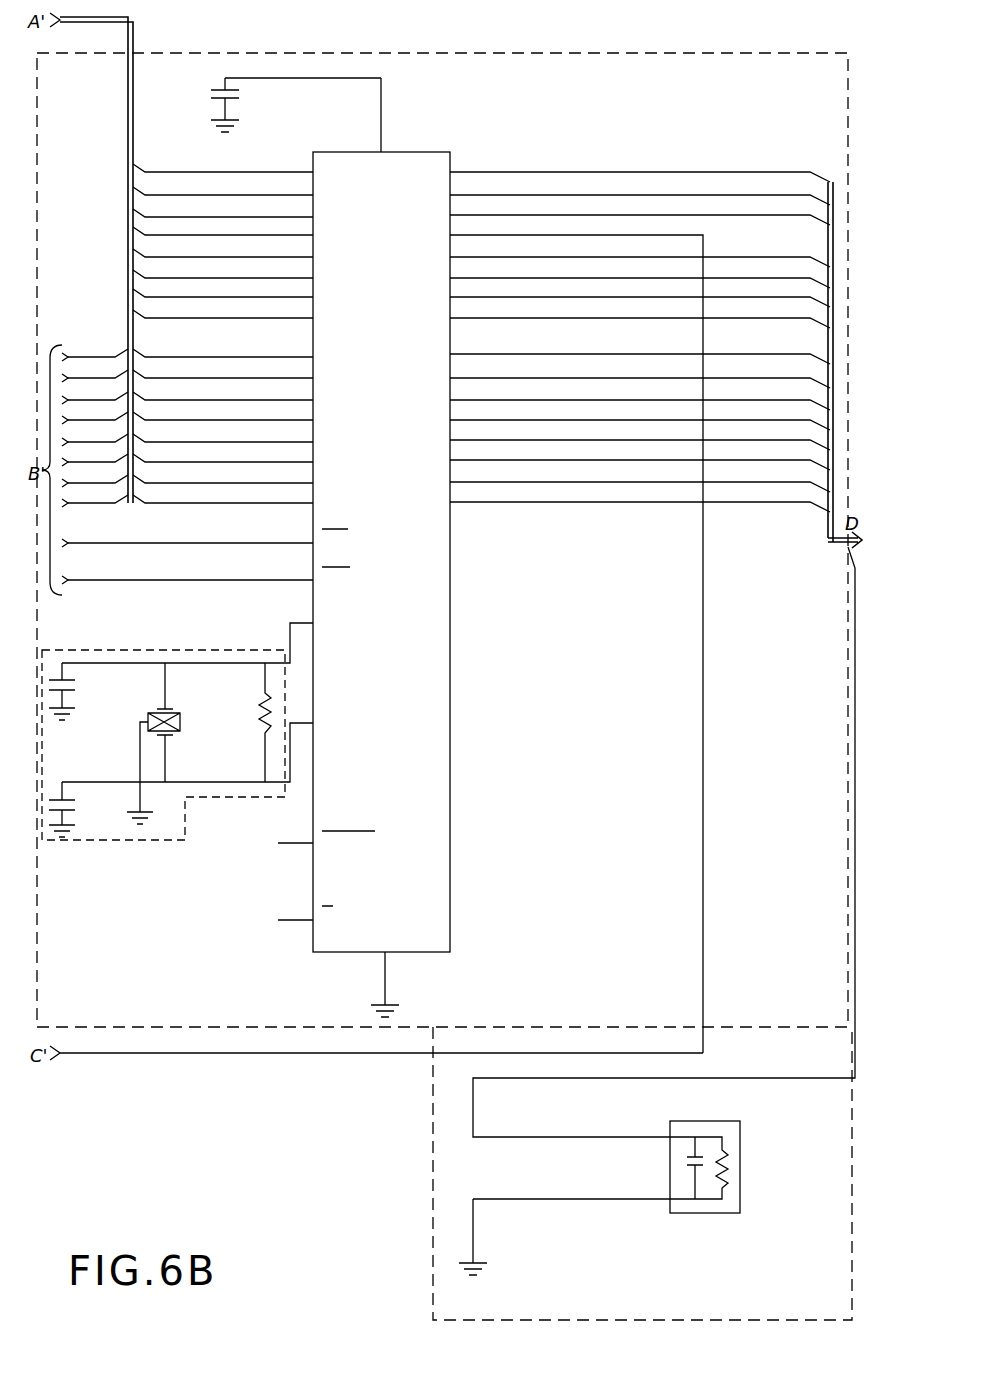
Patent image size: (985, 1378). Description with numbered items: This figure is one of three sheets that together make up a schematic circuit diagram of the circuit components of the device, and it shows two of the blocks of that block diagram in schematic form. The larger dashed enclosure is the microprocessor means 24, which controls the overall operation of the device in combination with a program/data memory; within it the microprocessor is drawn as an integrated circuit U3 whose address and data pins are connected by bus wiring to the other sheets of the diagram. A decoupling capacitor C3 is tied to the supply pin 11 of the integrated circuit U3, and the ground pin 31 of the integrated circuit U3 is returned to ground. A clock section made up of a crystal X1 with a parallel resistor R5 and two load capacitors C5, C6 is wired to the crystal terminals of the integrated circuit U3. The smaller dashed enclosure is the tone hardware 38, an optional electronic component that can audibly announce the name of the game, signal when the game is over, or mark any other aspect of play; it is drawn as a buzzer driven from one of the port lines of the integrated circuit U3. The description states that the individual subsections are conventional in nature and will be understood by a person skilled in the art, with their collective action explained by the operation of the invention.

The microprocessor means 24 is at (843, 92).
The tone hardware 38 is at (430, 1110).
The microprocessor U3 is at (395, 534).
The decoupling capacitor C3 is at (296, 105).
The crystal load capacitor C5 is at (87, 691).
The crystal load capacitor C6 is at (81, 809).
The crystal resonator X1 is at (174, 743).
The feedback resistor R5 is at (250, 722).
The VCC supply pin 11 is at (399, 109).
The ground pin 31 is at (385, 984).